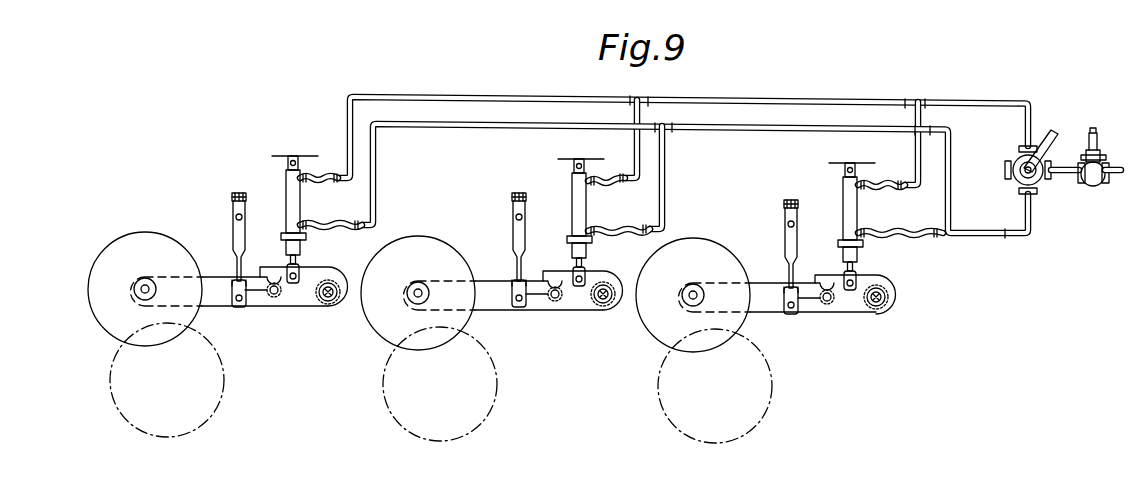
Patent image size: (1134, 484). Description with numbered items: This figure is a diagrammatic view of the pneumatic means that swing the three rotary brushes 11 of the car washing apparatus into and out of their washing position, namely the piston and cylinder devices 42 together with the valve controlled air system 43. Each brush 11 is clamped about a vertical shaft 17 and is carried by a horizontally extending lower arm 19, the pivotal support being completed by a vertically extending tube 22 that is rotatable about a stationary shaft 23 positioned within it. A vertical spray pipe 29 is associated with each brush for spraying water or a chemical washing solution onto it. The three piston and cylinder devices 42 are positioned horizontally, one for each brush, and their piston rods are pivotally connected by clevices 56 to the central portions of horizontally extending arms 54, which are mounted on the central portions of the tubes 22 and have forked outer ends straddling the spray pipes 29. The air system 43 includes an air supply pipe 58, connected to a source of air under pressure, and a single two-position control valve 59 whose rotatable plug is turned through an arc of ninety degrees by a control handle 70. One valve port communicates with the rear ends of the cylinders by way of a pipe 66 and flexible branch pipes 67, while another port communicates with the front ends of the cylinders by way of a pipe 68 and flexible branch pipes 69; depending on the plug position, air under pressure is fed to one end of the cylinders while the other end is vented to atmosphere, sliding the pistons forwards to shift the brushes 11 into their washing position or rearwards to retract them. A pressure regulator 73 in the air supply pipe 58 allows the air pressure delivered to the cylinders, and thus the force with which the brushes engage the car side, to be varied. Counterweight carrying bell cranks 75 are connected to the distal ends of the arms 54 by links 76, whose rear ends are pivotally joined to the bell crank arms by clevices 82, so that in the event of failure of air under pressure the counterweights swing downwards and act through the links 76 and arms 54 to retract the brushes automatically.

The rotary brushes 11 is at (152, 234).
The shafts 17 is at (422, 283).
The lower arms 19 is at (215, 306).
The tubes 22 is at (331, 304).
The shafts 23 is at (325, 303).
The spray pipes 29 is at (274, 298).
The piston and cylinder devices 42 is at (287, 184).
The valve controlled air system 43 is at (993, 94).
The horizontally extending arms 54 is at (577, 310).
The clevices 56 is at (516, 306).
The air supply pipe 58 is at (1068, 174).
The control valve 59 is at (1056, 154).
The pipe 66 is at (857, 99).
The flexible branch pipes 67 is at (319, 179).
The pipe 68 is at (738, 130).
The flexible branch pipes 69 is at (328, 227).
The control handle 70 is at (1040, 145).
The pressure regulator 73 is at (1091, 187).
The bell cranks 75 is at (242, 189).
The links 76 is at (785, 241).
The clevices 82 is at (232, 212).